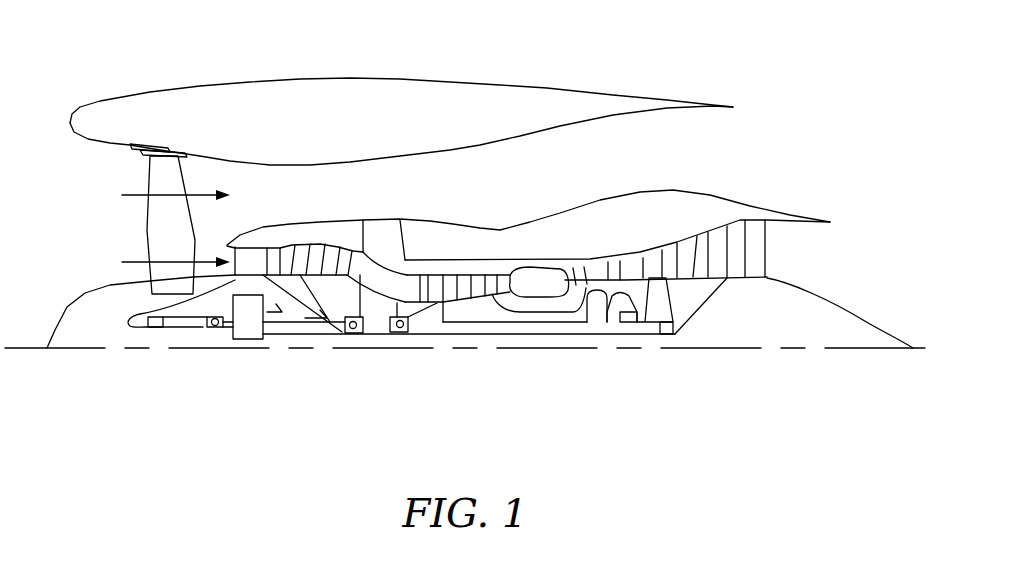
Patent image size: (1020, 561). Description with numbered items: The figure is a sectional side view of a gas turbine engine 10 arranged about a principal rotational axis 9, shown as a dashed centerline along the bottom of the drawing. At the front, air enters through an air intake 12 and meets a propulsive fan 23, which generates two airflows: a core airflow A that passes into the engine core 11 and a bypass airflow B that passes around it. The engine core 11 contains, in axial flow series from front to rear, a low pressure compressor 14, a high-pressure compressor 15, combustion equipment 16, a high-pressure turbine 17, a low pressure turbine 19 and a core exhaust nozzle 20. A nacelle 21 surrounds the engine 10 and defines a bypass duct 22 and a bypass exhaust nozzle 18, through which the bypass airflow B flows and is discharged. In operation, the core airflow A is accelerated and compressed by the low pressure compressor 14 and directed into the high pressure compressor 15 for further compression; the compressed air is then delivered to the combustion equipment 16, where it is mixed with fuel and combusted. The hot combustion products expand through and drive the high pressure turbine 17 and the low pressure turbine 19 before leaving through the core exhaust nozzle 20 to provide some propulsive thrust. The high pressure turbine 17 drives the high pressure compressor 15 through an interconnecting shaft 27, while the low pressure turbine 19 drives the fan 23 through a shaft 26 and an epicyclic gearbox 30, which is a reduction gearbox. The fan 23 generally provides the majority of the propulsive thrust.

The principal rotational axis 9 is at (773, 350).
The gas turbine engine 10 is at (393, 87).
The core 11 is at (509, 242).
The air intake 12 is at (126, 247).
The low pressure compressor 14 is at (317, 253).
The high-pressure compressor 15 is at (463, 285).
The combustion equipment 16 is at (538, 286).
The high-pressure turbine 17 is at (601, 268).
The bypass exhaust nozzle 18 is at (718, 146).
The low pressure turbine 19 is at (737, 240).
The core exhaust nozzle 20 is at (795, 251).
The nacelle 21 is at (375, 90).
The bypass duct 22 is at (663, 162).
The propulsive fan 23 is at (152, 227).
The shaft 26 is at (458, 336).
The interconnecting shaft 27 is at (493, 323).
The epicyclic gearbox 30 is at (247, 327).